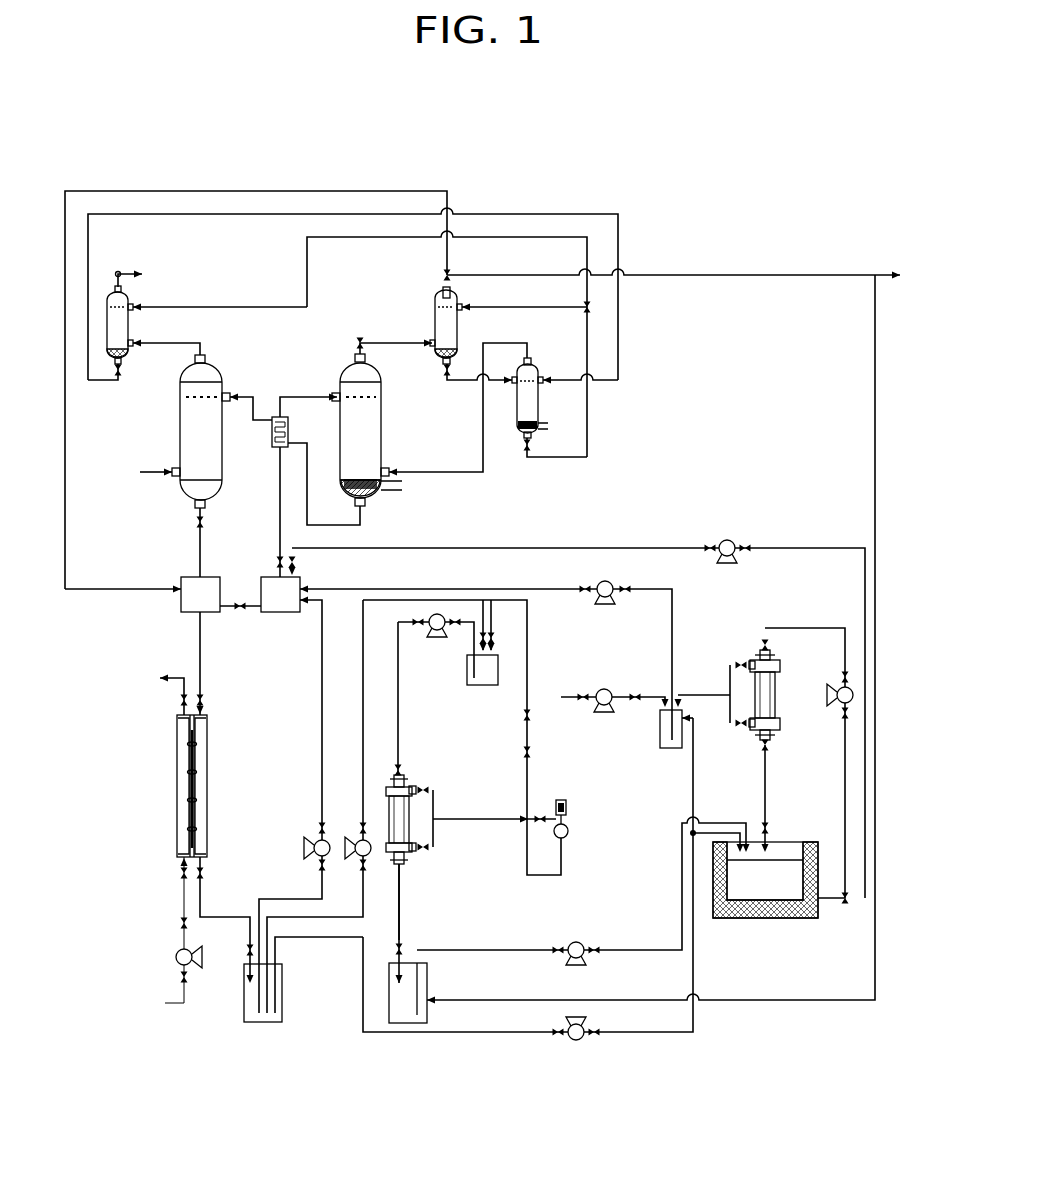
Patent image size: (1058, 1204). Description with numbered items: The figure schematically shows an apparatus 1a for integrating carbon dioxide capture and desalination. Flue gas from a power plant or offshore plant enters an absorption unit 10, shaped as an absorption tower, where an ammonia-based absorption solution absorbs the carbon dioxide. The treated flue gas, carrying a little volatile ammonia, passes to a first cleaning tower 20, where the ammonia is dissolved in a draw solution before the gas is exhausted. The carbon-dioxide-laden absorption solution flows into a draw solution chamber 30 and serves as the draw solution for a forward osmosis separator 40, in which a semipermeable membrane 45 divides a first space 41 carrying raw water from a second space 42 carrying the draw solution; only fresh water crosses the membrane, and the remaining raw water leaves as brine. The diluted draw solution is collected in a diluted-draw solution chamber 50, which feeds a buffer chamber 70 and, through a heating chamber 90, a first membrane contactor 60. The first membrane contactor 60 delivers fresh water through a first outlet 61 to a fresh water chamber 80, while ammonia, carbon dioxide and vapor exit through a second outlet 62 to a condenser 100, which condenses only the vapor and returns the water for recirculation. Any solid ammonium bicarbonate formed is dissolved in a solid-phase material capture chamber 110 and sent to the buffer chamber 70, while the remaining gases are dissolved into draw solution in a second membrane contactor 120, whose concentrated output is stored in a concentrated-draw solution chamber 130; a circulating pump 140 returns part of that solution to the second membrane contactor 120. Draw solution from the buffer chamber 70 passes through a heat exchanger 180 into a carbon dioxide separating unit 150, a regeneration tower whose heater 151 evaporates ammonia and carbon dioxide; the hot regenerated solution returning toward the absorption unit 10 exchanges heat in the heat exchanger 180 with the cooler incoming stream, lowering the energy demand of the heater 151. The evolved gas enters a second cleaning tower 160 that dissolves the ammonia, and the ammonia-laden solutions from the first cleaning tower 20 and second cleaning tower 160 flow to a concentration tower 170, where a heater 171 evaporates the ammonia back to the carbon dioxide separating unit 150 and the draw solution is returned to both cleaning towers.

The apparatus for integrating carbon dioxide capture and desalination 1a is at (792, 141).
The absorption unit 10 is at (176, 425).
The first cleaning tower 20 is at (108, 288).
The draw solution chamber 30 is at (181, 573).
The forward osmosis separator 40 is at (209, 710).
The first space 41 is at (182, 815).
The second space 42 is at (203, 815).
The semipermeable membrane 45 is at (196, 757).
The diluted-draw solution chamber 50 is at (288, 988).
The first membrane contactor 60 is at (388, 780).
The first outlet 61 is at (402, 866).
The second outlet 62 is at (413, 789).
The buffer chamber 70 is at (261, 573).
The fresh water chamber 80 is at (432, 986).
The heating chamber 90 is at (463, 670).
The condenser 100 is at (573, 830).
The solid-phase material capture chamber 110 is at (656, 729).
The second membrane contactor 120 is at (751, 652).
The concentrated-draw solution chamber 130 is at (790, 836).
The circulating pump 140 is at (828, 700).
The carbon dioxide separating unit 150 is at (388, 423).
The heater 151 is at (392, 493).
The second cleaning tower 160 is at (428, 307).
The concentration tower 170 is at (540, 363).
The heater 171 is at (546, 426).
The heat exchanger 180 is at (271, 445).